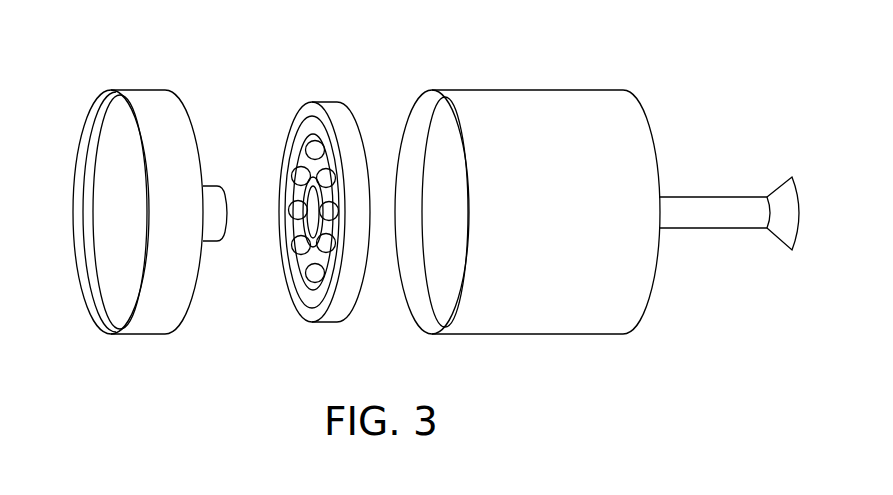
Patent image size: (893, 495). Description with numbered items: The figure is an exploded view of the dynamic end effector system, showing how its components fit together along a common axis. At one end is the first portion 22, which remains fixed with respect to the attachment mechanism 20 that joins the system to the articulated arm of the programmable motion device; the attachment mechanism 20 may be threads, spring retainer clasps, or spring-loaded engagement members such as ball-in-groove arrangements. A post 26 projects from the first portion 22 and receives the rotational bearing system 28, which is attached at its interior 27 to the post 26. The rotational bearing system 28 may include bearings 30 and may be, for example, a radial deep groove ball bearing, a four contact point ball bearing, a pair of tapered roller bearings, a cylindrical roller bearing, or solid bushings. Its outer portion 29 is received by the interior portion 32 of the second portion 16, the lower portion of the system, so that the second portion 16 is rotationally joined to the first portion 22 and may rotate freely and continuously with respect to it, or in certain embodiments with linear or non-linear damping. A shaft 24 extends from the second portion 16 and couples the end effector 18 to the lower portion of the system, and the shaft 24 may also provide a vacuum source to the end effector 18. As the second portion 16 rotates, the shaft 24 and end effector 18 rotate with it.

The second portion 16 is at (524, 211).
The end effector 18 is at (788, 190).
The attachment mechanism 20 is at (82, 211).
The first portion 22 is at (147, 89).
The shaft 24 is at (700, 208).
The post 26 is at (217, 217).
The interior 27 is at (305, 192).
The rotational bearing system 28 is at (307, 164).
The outer portion 29 is at (327, 110).
The bearings 30 is at (312, 147).
The interior portion 32 is at (428, 110).